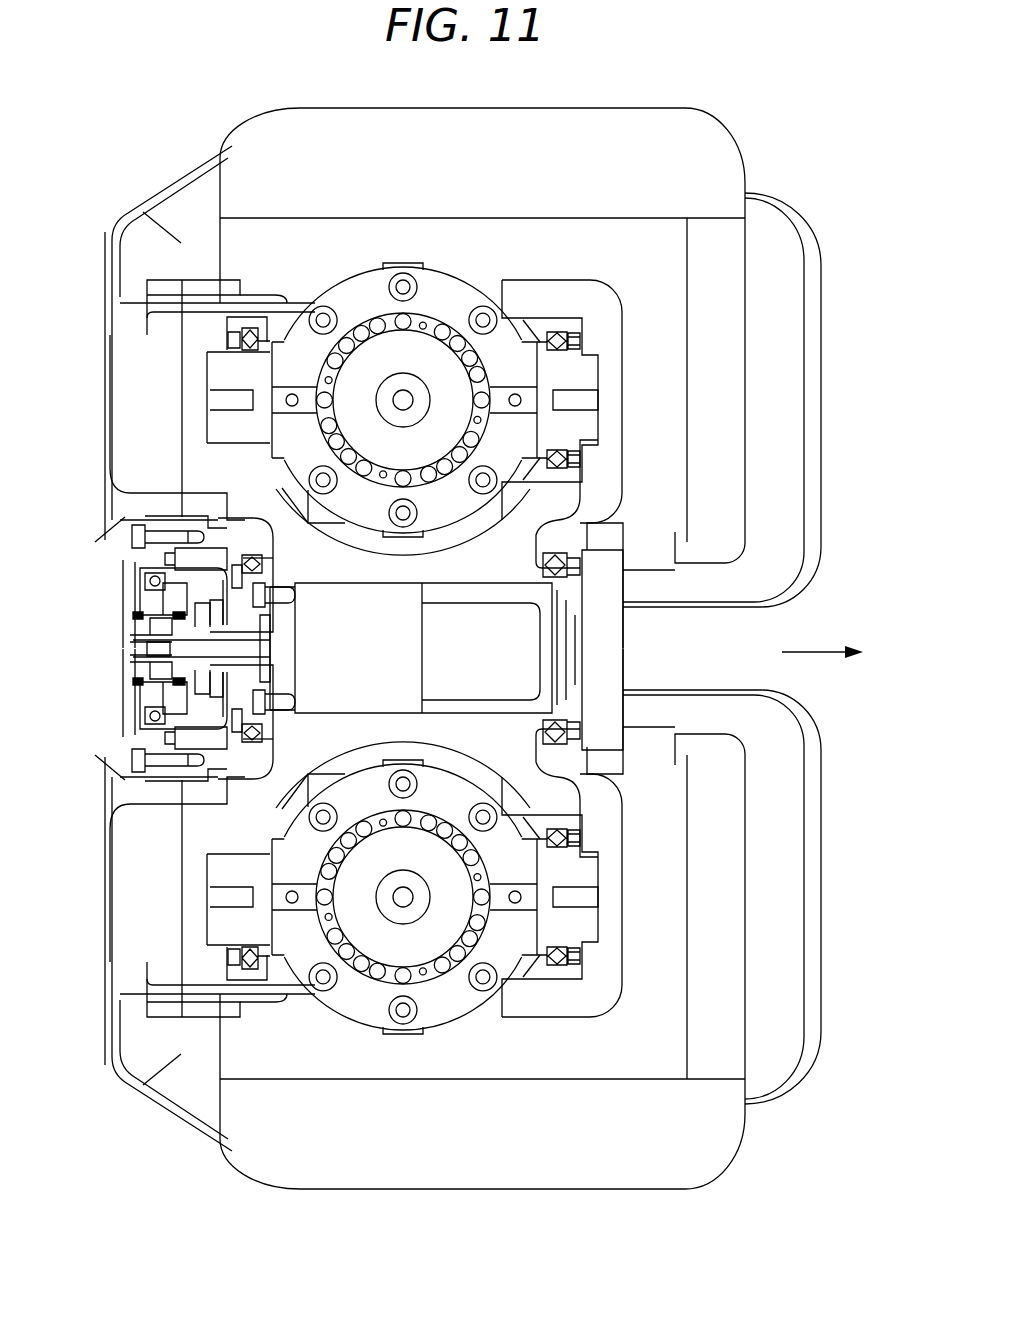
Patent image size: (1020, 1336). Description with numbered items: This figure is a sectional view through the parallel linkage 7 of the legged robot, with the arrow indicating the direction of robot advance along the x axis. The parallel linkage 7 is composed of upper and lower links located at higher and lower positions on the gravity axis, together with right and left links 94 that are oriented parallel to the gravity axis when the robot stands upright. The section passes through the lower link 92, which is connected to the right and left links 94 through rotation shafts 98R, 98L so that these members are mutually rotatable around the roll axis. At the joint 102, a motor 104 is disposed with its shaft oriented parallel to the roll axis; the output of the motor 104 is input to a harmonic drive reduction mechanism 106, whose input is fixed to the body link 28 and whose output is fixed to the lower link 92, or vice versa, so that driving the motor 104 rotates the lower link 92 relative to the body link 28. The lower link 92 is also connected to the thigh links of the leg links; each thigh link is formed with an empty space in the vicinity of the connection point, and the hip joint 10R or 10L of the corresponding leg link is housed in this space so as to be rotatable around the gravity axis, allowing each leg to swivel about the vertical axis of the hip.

The parallel linkage 7 is at (777, 170).
The hip joint (left) 10L is at (428, 358).
The hip joint (right) 10R is at (428, 943).
The body link 28 is at (128, 538).
The lower link 92 is at (511, 583).
The right and left links 94 is at (163, 429).
The rotation shaft (left) 98L is at (583, 378).
The rotation shaft (right) 98R is at (583, 884).
The joint 102 is at (605, 658).
The motor (actuator) 104 is at (376, 663).
The harmonic drive reduction mechanism 106 is at (160, 697).